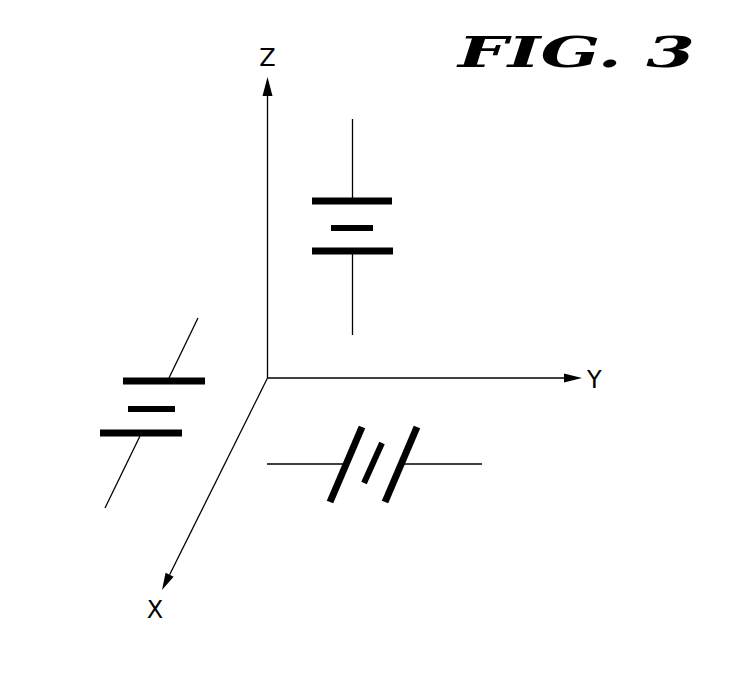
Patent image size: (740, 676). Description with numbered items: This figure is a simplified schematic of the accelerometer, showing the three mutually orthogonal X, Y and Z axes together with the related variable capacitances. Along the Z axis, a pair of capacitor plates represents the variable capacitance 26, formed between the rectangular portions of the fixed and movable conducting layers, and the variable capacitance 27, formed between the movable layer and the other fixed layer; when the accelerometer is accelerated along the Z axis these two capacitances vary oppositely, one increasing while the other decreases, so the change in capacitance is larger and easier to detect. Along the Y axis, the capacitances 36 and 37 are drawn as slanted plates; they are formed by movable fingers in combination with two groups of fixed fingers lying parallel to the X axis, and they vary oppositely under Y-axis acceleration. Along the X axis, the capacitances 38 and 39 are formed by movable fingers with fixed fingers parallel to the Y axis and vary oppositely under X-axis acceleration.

The variable capacitance 26 is at (381, 241).
The variable capacitance 27 is at (381, 214).
The variable capacitance 36 is at (348, 487).
The variable capacitance 37 is at (373, 488).
The variable capacitance 38 is at (128, 393).
The variable capacitance 39 is at (116, 418).